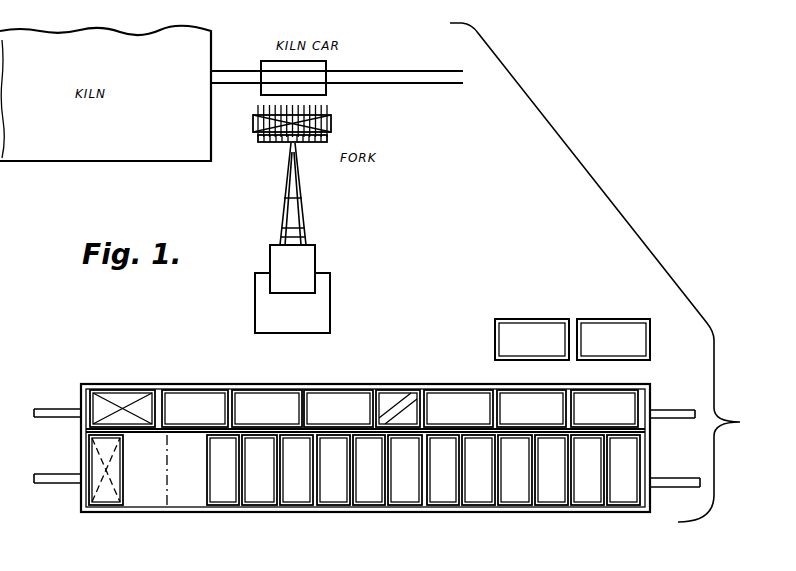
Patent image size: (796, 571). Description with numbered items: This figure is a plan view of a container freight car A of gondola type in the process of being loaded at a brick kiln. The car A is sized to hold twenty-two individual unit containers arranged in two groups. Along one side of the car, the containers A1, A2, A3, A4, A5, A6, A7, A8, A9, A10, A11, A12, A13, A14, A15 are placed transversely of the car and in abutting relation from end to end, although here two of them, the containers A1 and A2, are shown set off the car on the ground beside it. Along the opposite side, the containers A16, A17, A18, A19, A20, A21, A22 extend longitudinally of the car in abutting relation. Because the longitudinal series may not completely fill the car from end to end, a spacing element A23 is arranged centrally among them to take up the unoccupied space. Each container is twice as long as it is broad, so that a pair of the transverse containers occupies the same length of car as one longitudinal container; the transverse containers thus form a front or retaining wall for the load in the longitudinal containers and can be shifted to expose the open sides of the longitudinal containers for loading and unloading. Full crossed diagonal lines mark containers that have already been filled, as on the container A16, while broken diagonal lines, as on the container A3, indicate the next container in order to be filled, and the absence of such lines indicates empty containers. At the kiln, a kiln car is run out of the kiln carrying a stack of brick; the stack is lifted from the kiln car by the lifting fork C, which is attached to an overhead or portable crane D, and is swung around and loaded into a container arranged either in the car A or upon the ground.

The freight car A is at (97, 384).
The container A1 is at (532, 339).
The container A2 is at (613, 339).
The container A3 is at (92, 460).
The container A4 is at (223, 470).
The container A5 is at (259, 470).
The container A6 is at (296, 470).
The container A7 is at (333, 470).
The container A8 is at (369, 470).
The container A9 is at (405, 470).
The container A10 is at (443, 470).
The container A11 is at (478, 470).
The container A12 is at (515, 470).
The container A13 is at (551, 470).
The container A14 is at (587, 470).
The container A15 is at (623, 470).
The container A16 is at (122, 408).
The container A17 is at (195, 408).
The container A18 is at (267, 408).
The container A19 is at (338, 408).
The container A20 is at (458, 408).
The container A21 is at (531, 408).
The container A22 is at (604, 408).
The spacing element A23 is at (398, 395).
The lifting fork C is at (331, 123).
The crane D is at (304, 238).